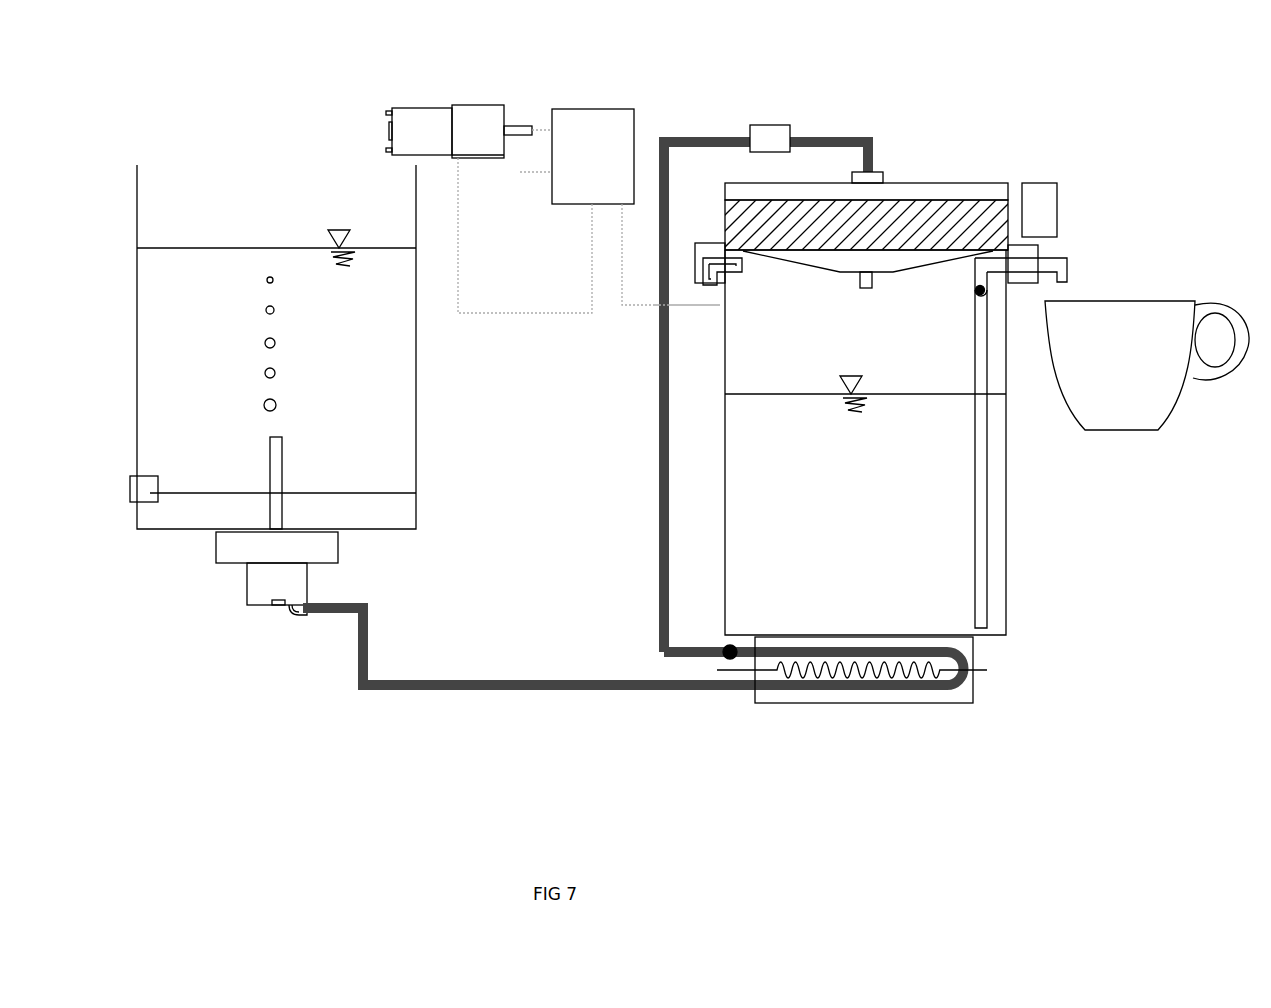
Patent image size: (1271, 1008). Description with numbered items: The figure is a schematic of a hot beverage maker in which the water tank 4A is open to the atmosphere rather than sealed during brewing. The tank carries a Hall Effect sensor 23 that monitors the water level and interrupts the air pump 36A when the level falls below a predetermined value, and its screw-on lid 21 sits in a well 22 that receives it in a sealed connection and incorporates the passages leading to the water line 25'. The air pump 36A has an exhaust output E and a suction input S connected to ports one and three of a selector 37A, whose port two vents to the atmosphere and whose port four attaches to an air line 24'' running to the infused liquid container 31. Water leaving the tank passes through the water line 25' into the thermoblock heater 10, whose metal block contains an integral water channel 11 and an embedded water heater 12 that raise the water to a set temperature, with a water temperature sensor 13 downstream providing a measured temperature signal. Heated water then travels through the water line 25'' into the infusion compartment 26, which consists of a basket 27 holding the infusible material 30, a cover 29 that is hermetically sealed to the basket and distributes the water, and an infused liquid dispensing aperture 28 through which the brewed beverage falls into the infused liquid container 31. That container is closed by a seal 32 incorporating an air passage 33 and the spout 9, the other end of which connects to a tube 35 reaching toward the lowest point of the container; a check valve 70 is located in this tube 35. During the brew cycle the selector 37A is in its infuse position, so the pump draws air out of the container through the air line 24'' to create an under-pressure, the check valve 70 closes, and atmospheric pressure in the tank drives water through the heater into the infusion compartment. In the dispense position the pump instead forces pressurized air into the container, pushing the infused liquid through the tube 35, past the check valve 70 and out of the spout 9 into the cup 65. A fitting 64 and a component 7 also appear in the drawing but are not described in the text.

The water tank 4A is at (253, 204).
The Hall Effect sensor 23 is at (131, 486).
The screw-on lid 21 is at (228, 549).
The well 22 is at (262, 580).
The air pump 36A is at (473, 115).
The exhaust output E is at (514, 128).
The suction input S is at (463, 158).
The selector 37A is at (590, 122).
The water line 25'' is at (624, 397).
The seal 32 is at (663, 165).
The valve 64 is at (770, 138).
The water line 25' is at (633, 672).
The air line 24'' is at (670, 325).
The cover 29 is at (893, 197).
The infusion compartment 26 is at (822, 207).
The infusible material 30 is at (928, 223).
The infused liquid dispensing aperture 28 is at (862, 283).
The air passage 33 is at (703, 252).
The basket 27 is at (722, 253).
The sensor block 7 is at (1042, 215).
The spout 9 is at (1065, 265).
The tube 35 is at (985, 565).
The check valve 70 is at (983, 288).
The infused liquid container 31 is at (940, 518).
The thermoblock heater 10 is at (878, 698).
The water channel 11 is at (957, 688).
The water heater 12 is at (938, 665).
The water temperature sensor 13 is at (733, 657).
The cup 65 is at (1112, 343).